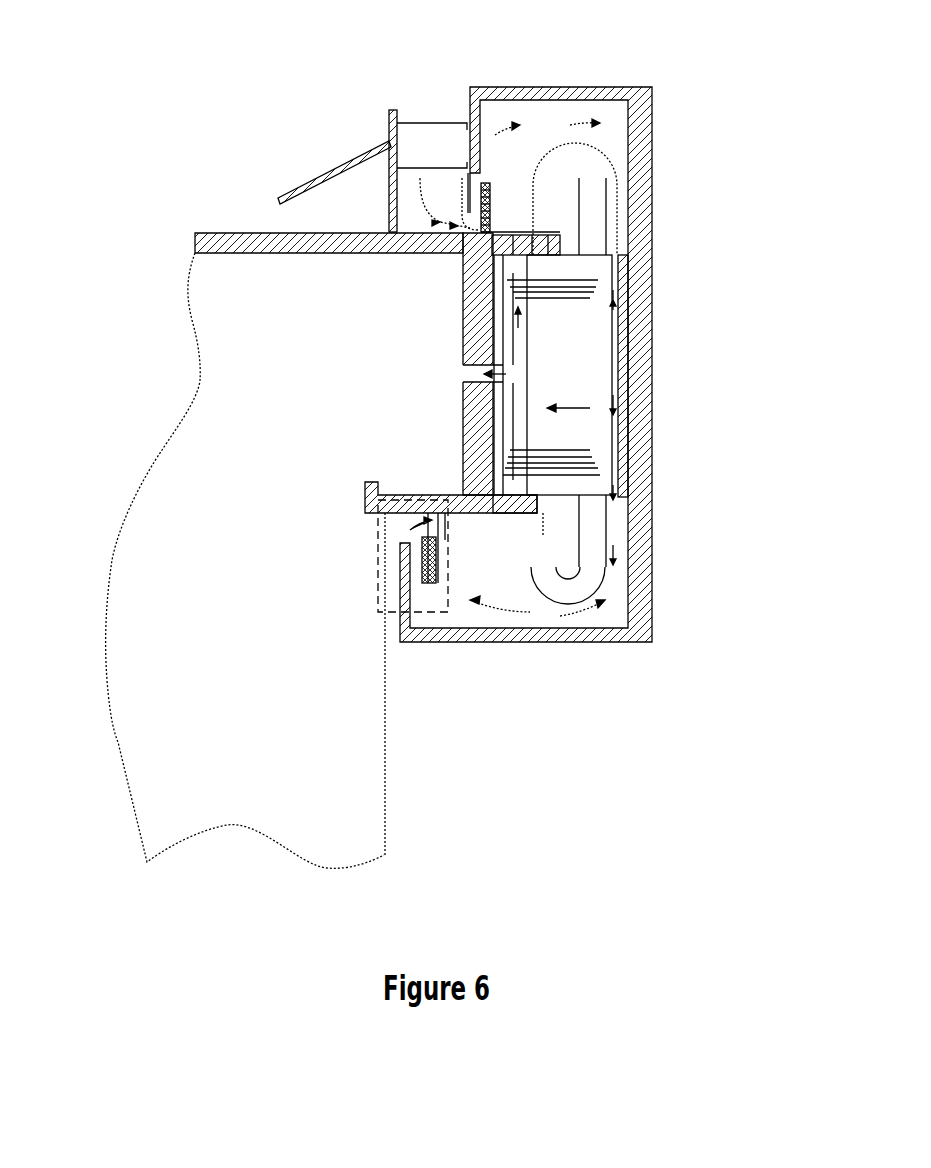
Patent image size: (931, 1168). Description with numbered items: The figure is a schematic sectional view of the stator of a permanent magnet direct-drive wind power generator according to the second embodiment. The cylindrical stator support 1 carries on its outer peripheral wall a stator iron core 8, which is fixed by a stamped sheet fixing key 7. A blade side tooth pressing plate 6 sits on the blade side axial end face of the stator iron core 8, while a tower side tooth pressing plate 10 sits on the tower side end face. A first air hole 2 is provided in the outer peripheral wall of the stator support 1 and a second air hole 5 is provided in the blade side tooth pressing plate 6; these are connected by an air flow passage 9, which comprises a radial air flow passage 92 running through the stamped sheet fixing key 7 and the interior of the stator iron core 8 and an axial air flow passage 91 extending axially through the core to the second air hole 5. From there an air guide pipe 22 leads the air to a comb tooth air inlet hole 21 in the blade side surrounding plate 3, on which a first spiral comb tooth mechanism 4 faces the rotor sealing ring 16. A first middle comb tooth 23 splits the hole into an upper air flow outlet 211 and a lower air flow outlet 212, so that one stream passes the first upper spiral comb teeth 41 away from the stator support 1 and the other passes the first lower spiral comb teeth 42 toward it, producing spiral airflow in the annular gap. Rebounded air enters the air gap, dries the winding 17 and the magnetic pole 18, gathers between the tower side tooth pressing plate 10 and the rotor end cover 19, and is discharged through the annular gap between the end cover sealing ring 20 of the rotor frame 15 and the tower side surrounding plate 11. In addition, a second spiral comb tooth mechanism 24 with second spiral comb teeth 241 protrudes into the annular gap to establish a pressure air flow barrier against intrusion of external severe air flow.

The stator support 1 is at (232, 233).
The first air hole 2 is at (463, 365).
The blade side surrounding plate 3 is at (470, 178).
The first spiral comb tooth mechanism 4 is at (480, 188).
The second air hole 5 is at (520, 243).
The blade side tooth pressing plate 6 is at (545, 235).
The stamped sheet fixing key 7 is at (490, 447).
The stator iron core 8 is at (500, 256).
The air flow passage 9 is at (556, 408).
The tower side tooth pressing plate 10 is at (540, 508).
The tower side surrounding plate 11 is at (596, 565).
The rotor frame 15 is at (343, 165).
The rotor sealing ring 16 is at (466, 180).
The winding 17 is at (490, 183).
The magnetic pole 18 is at (622, 447).
The rotor end cover 19 is at (620, 642).
The end cover sealing ring 20 is at (403, 642).
The comb tooth air inlet hole 21 is at (490, 197).
The air guide pipe 22 is at (490, 225).
The first middle comb tooth 23 is at (490, 211).
The second spiral comb tooth mechanism 24 is at (438, 582).
The first upper spiral comb teeth 41 is at (490, 190).
The first lower spiral comb teeth 42 is at (490, 232).
The axial air flow passage 91 is at (517, 343).
The radial air flow passage 92 is at (508, 378).
The upper air flow outlet 211 is at (490, 204).
The lower air flow outlet 212 is at (490, 218).
The second spiral comb teeth 241 is at (450, 517).